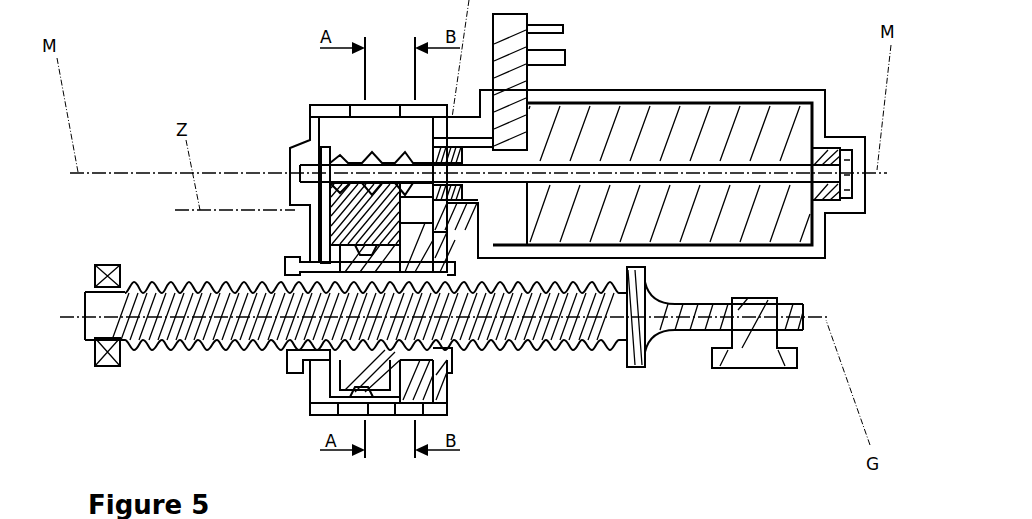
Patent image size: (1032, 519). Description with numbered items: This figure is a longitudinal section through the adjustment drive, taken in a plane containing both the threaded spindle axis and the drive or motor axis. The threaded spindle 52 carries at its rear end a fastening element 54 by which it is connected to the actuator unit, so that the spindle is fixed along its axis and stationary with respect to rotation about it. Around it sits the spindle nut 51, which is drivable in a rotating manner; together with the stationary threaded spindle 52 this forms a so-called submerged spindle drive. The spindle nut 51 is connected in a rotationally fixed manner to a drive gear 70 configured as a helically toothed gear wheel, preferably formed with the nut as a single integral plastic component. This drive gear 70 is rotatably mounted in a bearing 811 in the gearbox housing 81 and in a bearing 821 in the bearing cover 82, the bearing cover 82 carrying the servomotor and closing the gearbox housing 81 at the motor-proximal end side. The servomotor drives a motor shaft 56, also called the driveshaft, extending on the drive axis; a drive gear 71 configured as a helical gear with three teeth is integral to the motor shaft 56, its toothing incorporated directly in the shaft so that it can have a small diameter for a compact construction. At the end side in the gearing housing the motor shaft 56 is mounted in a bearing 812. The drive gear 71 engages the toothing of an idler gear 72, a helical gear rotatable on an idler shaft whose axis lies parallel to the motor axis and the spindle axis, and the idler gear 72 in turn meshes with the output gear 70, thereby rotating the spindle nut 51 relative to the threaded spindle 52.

The spindle nut 51 is at (292, 263).
The threaded spindle 52 is at (583, 347).
The fastening element 54 is at (765, 353).
The motor shaft 56 is at (660, 173).
The drive gear 70 is at (333, 253).
The drive gear 71 is at (345, 165).
The idler gear 72 is at (325, 198).
The gearbox housing 81 is at (322, 403).
The bearing cover 82 is at (423, 380).
The bearing 811 is at (317, 365).
The bearing 812 is at (312, 165).
The bearing 821 is at (420, 365).